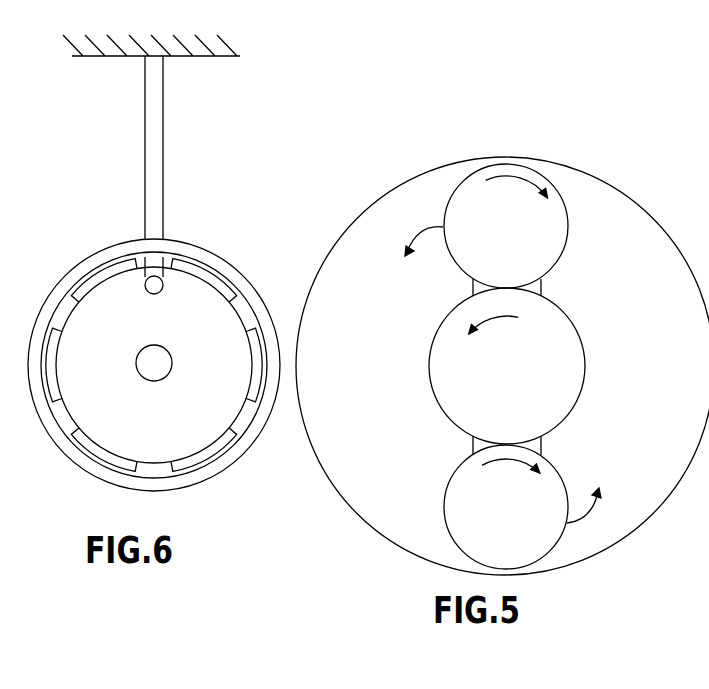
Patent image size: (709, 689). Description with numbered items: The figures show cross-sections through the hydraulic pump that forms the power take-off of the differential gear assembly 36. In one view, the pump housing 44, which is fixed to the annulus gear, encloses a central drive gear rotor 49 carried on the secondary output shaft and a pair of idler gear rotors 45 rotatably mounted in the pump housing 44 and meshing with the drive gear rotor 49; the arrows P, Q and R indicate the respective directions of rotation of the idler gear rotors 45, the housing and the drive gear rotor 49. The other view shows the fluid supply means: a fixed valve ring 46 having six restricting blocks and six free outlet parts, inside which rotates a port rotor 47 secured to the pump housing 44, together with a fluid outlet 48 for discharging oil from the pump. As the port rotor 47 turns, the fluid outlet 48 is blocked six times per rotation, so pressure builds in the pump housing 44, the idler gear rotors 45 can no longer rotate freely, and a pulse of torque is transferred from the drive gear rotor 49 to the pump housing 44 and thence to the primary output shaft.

In FIG. 6, the differential gear assembly 36 is at (207, 160).
In FIG. 5, the differential gear assembly 36 is at (503, 129).
In FIG. 5, the pump housing 44 is at (600, 177).
In FIG. 5, the idler gear rotors 45 is at (498, 233).
In FIG. 6, the valve ring 46 is at (92, 262).
In FIG. 6, the port rotor 47 is at (203, 415).
In FIG. 6, the fluid outlet 48 is at (159, 289).
In FIG. 5, the drive gear rotor 49 is at (545, 396).